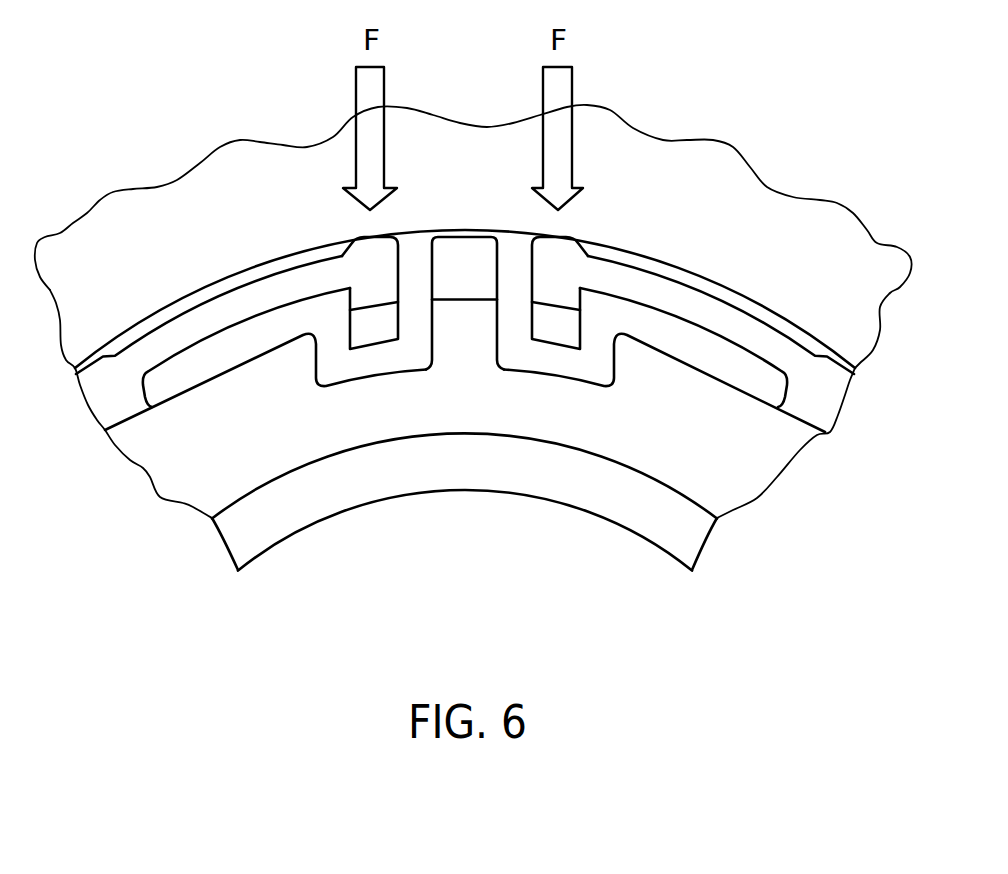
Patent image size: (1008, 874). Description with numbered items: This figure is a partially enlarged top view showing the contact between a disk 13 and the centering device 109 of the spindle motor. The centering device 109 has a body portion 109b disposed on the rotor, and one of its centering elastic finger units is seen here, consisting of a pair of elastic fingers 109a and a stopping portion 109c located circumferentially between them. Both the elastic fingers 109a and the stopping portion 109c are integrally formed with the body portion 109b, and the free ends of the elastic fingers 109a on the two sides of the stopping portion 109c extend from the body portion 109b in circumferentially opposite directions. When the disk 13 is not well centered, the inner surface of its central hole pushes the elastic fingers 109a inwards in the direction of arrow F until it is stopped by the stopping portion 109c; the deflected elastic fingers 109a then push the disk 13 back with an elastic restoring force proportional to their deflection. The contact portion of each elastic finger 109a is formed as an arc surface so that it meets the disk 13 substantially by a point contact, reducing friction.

The disk 13 is at (275, 172).
The centering device 109 is at (701, 292).
The elastic fingers 109a is at (567, 237).
The body portion 109b is at (837, 355).
The stopping portion 109c is at (460, 237).